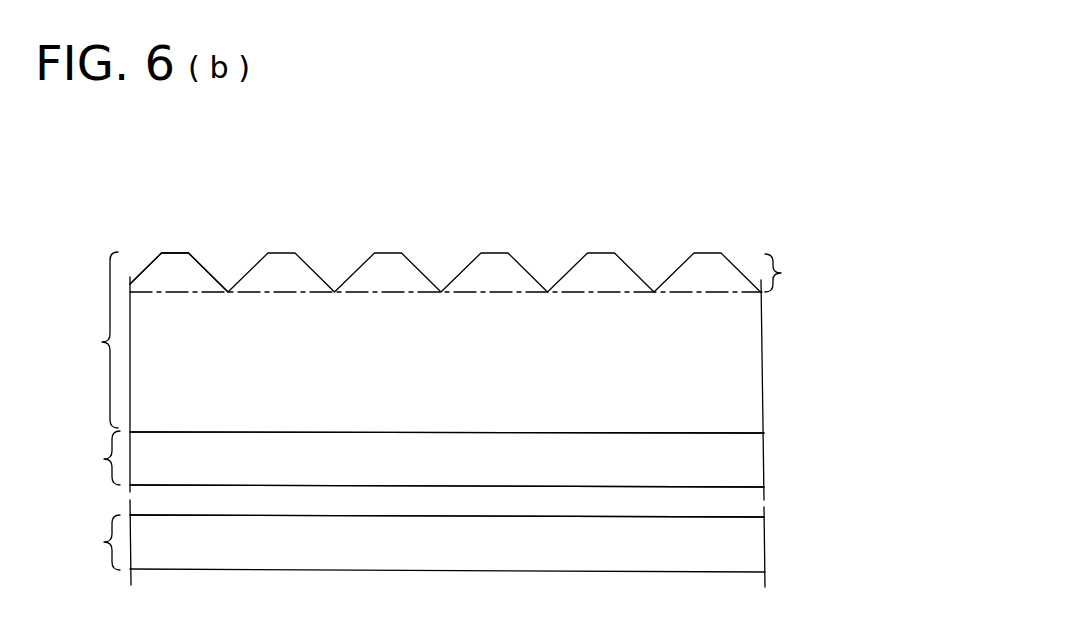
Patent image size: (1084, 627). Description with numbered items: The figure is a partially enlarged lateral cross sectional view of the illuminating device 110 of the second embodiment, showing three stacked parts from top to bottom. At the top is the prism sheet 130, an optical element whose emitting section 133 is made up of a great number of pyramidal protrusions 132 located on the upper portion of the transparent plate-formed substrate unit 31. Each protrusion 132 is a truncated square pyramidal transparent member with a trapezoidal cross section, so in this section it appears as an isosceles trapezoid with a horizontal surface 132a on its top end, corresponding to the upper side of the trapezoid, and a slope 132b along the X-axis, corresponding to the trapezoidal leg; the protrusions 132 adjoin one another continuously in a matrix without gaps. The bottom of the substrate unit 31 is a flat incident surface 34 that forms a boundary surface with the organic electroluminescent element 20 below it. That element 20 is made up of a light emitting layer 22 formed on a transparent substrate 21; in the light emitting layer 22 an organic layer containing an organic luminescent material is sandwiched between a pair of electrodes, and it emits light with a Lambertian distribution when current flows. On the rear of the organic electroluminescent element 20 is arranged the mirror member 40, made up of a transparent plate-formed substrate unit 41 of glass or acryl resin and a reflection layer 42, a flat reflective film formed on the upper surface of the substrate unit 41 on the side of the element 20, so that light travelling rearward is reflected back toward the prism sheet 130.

The illuminating device 110 is at (754, 211).
The prism sheet 130 is at (86, 340).
The emitting section 133 is at (453, 223).
The pyramidal protrusion 132 is at (176, 250).
The horizontal surface 132a is at (182, 250).
The slope 132b is at (149, 262).
The substrate unit 31 is at (765, 348).
The incident surface 34 is at (749, 440).
The organic electroluminescent element 20 is at (450, 468).
The transparent substrate 21 is at (746, 460).
The light emitting layer 22 is at (748, 484).
The mirror member 40 is at (450, 543).
The reflection layer 42 is at (746, 517).
The substrate unit 41 is at (750, 556).